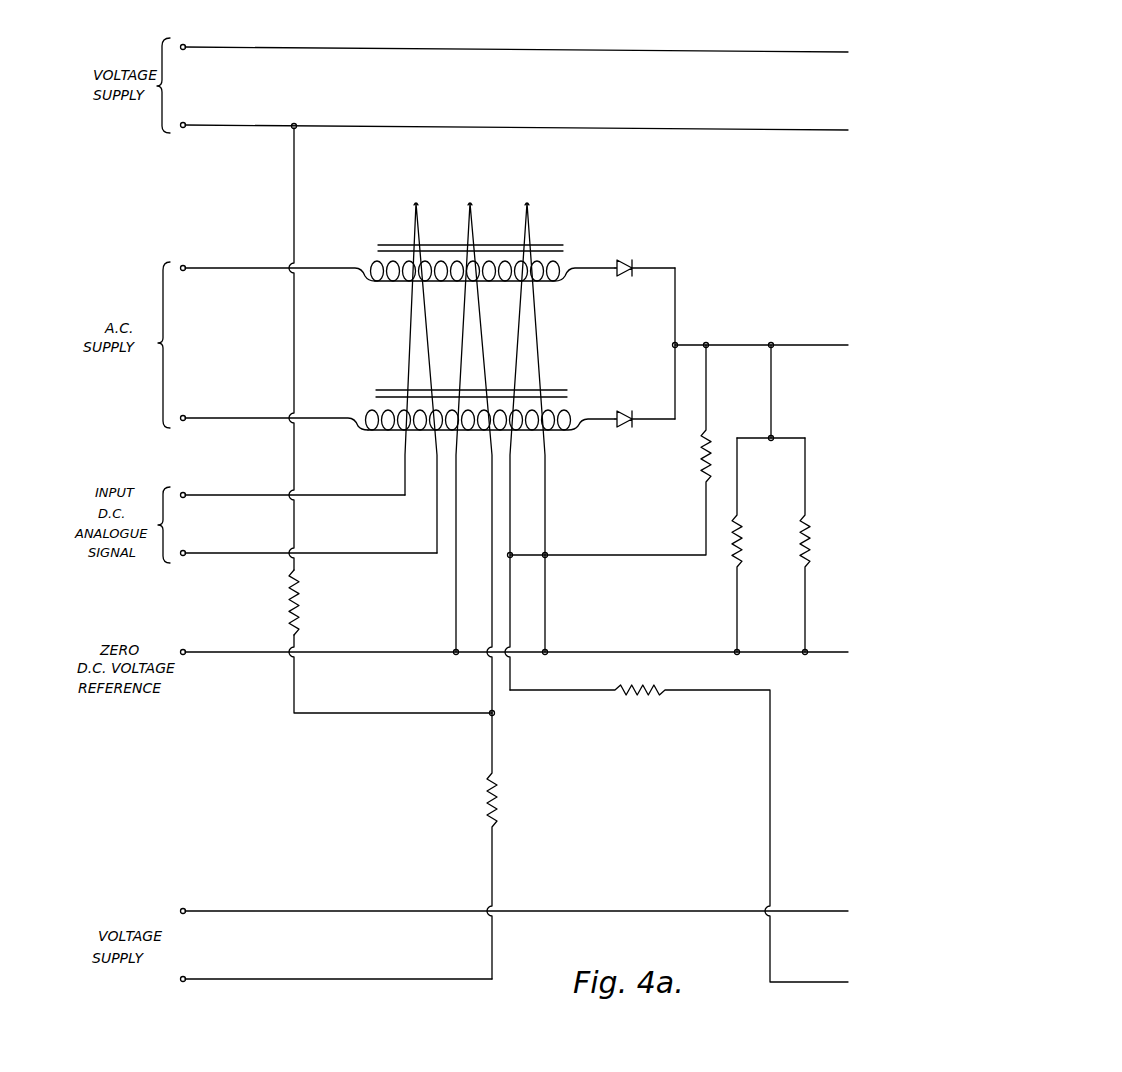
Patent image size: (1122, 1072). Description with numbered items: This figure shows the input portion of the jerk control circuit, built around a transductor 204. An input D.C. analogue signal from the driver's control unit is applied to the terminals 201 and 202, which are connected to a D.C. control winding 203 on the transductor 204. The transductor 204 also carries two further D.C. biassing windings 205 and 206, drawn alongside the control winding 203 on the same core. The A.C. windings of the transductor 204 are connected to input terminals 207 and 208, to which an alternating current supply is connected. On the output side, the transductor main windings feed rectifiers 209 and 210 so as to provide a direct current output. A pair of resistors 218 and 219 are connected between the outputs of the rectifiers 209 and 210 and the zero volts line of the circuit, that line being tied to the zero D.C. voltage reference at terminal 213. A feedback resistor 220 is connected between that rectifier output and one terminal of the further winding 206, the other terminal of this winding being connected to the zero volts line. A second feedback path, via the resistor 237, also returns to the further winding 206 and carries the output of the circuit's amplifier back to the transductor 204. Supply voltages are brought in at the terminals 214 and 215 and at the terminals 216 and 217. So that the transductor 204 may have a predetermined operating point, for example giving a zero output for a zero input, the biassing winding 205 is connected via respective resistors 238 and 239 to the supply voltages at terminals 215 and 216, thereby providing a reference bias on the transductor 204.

The terminal 201 is at (199, 485).
The terminal 202 is at (199, 543).
The D.C. control winding 203 is at (431, 192).
The transductor 204 is at (532, 173).
The D.C. biassing winding 205 is at (484, 192).
The D.C. biassing winding 206 is at (530, 207).
The input terminal 207 is at (199, 258).
The input terminal 208 is at (199, 408).
The rectifier 209 is at (645, 251).
The rectifier 210 is at (648, 401).
The terminal 213 is at (200, 642).
The terminal 214 is at (197, 37).
The terminal 215 is at (200, 970).
The terminal 216 is at (197, 114).
The terminal 217 is at (200, 902).
The resistor 218 is at (765, 517).
The resistor 219 is at (815, 537).
The feedback resistor 220 is at (699, 456).
The resistor 237 is at (626, 699).
The resistor 238 is at (499, 818).
The resistor 239 is at (312, 606).